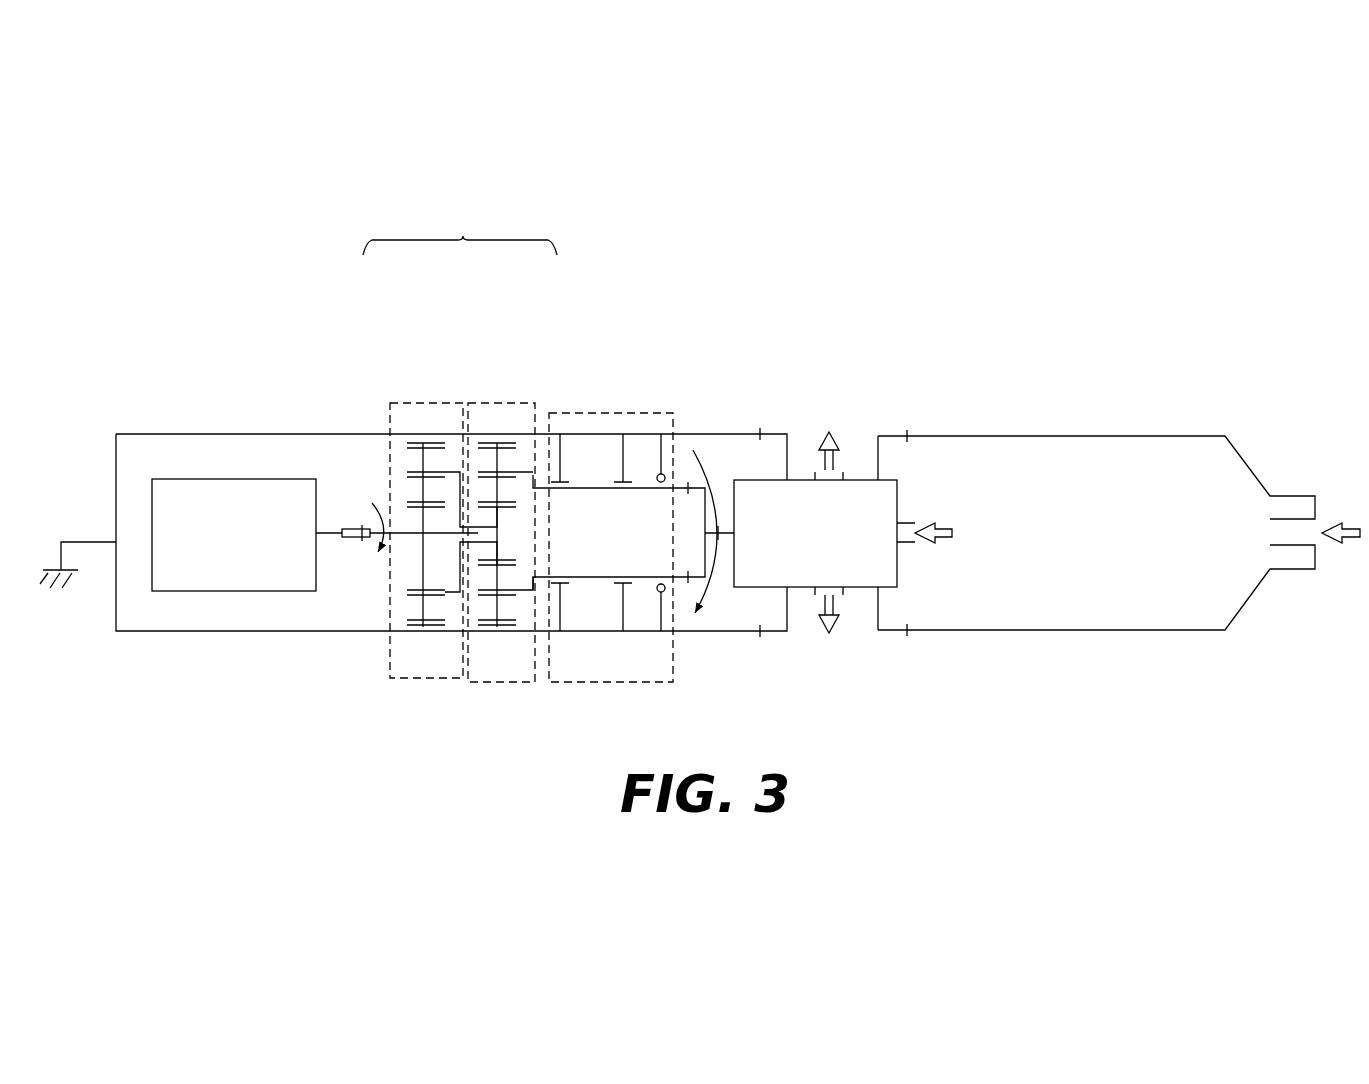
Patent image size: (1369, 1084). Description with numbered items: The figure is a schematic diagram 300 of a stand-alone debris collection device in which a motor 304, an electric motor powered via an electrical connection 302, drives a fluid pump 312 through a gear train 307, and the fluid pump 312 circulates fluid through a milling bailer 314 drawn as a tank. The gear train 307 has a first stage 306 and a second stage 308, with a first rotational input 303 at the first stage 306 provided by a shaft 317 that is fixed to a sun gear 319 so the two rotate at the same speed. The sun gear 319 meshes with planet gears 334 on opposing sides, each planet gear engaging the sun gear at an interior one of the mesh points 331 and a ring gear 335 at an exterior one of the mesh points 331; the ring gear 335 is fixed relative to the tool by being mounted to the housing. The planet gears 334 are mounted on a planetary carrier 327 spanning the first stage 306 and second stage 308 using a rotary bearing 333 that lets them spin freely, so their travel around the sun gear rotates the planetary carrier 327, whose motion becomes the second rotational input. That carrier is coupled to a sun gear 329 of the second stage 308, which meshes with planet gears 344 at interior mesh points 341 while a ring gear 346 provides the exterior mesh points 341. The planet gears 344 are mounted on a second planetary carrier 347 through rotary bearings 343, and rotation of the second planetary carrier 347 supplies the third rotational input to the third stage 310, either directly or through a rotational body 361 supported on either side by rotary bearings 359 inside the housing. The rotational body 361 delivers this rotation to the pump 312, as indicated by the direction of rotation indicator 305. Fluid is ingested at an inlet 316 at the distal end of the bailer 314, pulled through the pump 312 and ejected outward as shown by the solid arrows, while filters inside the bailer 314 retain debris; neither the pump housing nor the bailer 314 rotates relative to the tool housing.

The diagram 300 is at (245, 245).
The electrical connection 302 is at (90, 542).
The first rotational input 303 is at (367, 490).
The motor 304 is at (232, 479).
The direction of rotation indicator 305 is at (693, 450).
The first stage 306 is at (443, 402).
The gear train 307 is at (463, 237).
The second stage 308 is at (533, 405).
The third stage 310 is at (615, 413).
The fluid pump 312 is at (860, 480).
The milling bailer 314 is at (1003, 436).
The inlet 316 is at (1353, 517).
The shaft 317 is at (358, 543).
The sun gear 319 is at (420, 542).
The planetary carrier 327 is at (447, 597).
The sun gear 329 is at (483, 597).
The mesh points 331 is at (405, 493).
The rotary bearing 333 is at (412, 597).
The planet gears 334 is at (430, 457).
The ring gear 335 is at (420, 630).
The mesh points 341 is at (487, 433).
The rotary bearings 343 is at (492, 548).
The planet gears 344 is at (485, 493).
The ring gear 346 is at (492, 632).
The second planetary carrier 347 is at (522, 597).
The rotary bearings 359 is at (562, 590).
The rotational body 361 is at (650, 594).